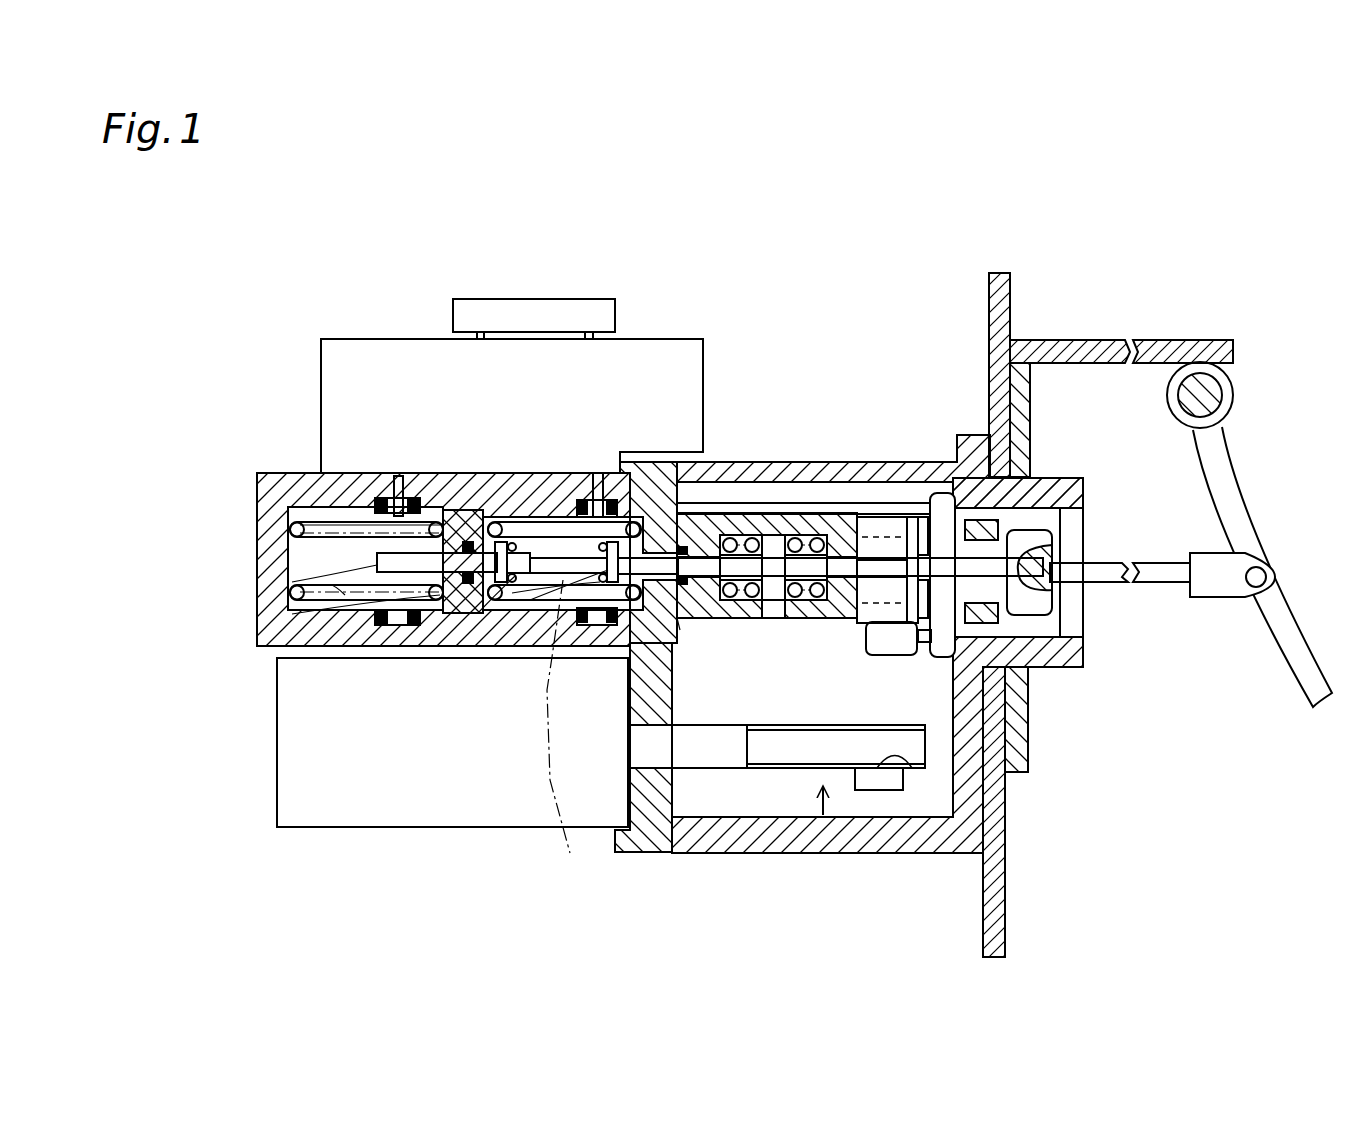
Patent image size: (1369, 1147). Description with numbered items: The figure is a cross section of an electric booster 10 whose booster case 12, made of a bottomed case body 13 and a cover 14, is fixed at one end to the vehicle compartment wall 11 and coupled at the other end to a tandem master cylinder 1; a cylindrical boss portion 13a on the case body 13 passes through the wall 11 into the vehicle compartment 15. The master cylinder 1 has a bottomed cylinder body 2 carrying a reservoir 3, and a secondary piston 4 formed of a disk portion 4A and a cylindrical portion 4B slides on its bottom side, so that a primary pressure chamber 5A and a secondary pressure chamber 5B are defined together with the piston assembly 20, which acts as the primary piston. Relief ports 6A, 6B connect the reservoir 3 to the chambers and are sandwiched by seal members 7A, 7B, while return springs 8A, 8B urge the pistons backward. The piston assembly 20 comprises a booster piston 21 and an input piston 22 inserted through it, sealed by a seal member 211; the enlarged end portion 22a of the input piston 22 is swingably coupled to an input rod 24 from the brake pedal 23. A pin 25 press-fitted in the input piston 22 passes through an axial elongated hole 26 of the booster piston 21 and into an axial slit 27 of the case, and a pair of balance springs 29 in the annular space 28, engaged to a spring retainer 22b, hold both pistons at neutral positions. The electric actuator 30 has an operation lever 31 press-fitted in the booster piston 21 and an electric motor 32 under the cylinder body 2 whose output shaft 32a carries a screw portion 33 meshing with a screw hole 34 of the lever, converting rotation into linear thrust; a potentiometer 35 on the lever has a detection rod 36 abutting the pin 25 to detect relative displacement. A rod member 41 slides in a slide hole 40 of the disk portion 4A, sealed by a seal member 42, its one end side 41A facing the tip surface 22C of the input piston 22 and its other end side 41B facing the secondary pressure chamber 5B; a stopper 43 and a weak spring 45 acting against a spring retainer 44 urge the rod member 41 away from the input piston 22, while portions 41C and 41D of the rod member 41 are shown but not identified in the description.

The tandem master cylinder 1 is at (272, 362).
The cylinder body 2 is at (258, 496).
The reservoir 3 is at (346, 347).
The secondary piston 4 is at (480, 520).
The disk portion 4A is at (445, 505).
The cylindrical portion 4B is at (400, 613).
The primary pressure chamber 5A is at (520, 598).
The secondary pressure chamber 5B is at (345, 595).
The relief port 6A is at (597, 500).
The relief port 6B is at (397, 505).
The seal member 7A is at (648, 495).
The seal member 7B is at (412, 512).
The return spring 8A is at (540, 520).
The return spring 8B is at (330, 520).
The electric booster 10 is at (858, 362).
The vehicle compartment wall 11 is at (1005, 890).
The booster case 12 is at (849, 698).
The case body 13 is at (708, 848).
The boss portion 13a is at (1080, 497).
The cover 14 is at (643, 778).
The vehicle compartment 15 is at (1217, 818).
The piston assembly 20 is at (802, 408).
The booster piston 21 is at (735, 532).
The input piston 22 is at (785, 556).
The enlarged end portion 22a is at (1047, 603).
The spring retainer 22b is at (773, 603).
The tip surface 22C is at (640, 575).
The brake pedal 23 is at (1300, 633).
The input rod 24 is at (1162, 565).
The pin 25 is at (940, 492).
The axial elongated hole 26 is at (985, 522).
The axial slit 27 is at (893, 502).
The annular space 28 is at (830, 512).
The balance spring 29 is at (730, 602).
The electric actuator 30 is at (823, 815).
The operation lever 31 is at (877, 790).
The electric motor 32 is at (292, 763).
The output shaft 32a is at (920, 750).
The screw portion 33 is at (775, 770).
The screw hole 34 is at (900, 757).
The potentiometer 35 is at (887, 647).
The detection rod 36 is at (932, 645).
The slide hole 40 is at (292, 614).
The rod member 41 is at (372, 556).
The one end side 41A is at (530, 600).
The other end side 41B is at (378, 535).
The rod axis 41C is at (563, 480).
The rod shoulder 41D is at (292, 582).
The seal member 42 is at (478, 613).
The stopper 43 is at (510, 588).
The spring retainer 44 is at (606, 492).
The weak spring 45 is at (512, 593).
The seal member 211 is at (680, 630).